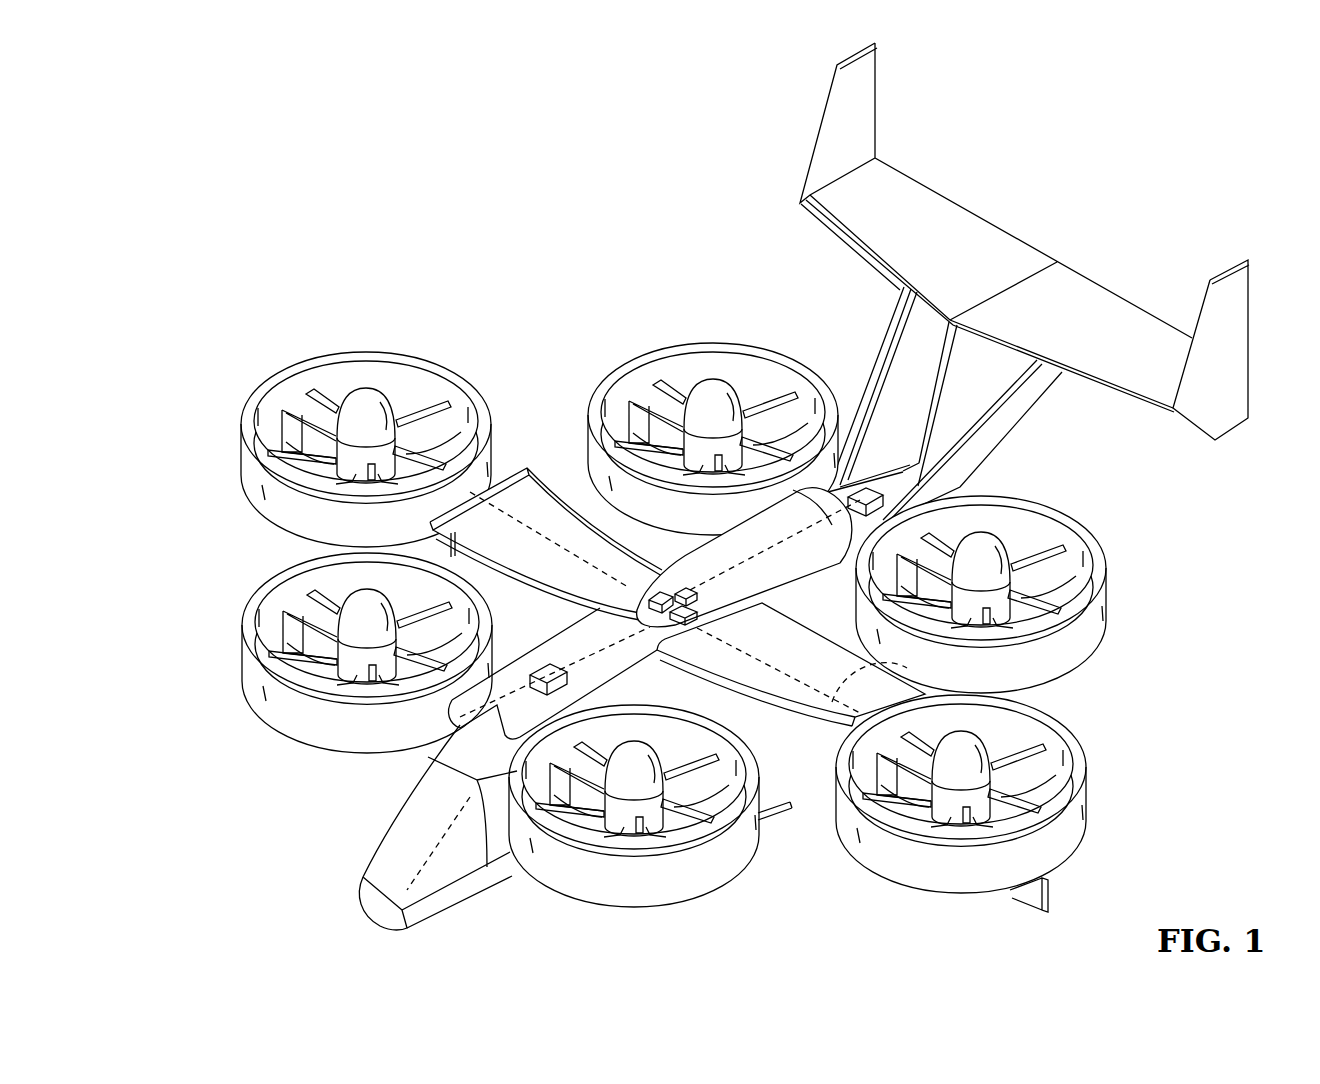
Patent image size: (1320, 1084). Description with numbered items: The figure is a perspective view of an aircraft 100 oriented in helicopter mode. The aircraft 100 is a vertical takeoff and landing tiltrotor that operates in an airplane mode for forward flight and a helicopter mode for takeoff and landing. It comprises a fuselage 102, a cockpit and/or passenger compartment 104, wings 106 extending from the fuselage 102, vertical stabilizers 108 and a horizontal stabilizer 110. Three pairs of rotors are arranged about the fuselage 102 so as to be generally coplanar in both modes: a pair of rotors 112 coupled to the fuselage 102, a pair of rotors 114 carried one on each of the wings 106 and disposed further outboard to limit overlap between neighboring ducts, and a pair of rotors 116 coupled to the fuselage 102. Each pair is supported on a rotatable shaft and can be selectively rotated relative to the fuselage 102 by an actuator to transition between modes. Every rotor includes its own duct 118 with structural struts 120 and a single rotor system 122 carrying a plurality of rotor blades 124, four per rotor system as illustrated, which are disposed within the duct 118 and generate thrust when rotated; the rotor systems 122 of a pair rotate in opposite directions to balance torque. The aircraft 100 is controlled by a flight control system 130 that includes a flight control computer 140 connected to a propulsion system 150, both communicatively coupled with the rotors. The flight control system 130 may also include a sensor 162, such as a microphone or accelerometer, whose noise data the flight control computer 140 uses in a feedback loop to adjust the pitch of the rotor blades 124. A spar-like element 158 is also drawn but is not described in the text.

The aircraft 100 is at (376, 206).
The fuselage 102 is at (363, 890).
The cockpit and/or passenger compartment 104 is at (393, 825).
The wings 106 is at (525, 508).
The vertical stabilizers 108 is at (897, 317).
The horizontal stabilizer 110 is at (990, 235).
The pair of rotors 112 is at (231, 720).
The pair of rotors 114 is at (222, 441).
The pair of rotors 116 is at (642, 283).
The duct 118 is at (398, 380).
The struts 120 is at (282, 412).
The rotor system 122 is at (367, 397).
The rotor blades 124 is at (443, 408).
The flight control system 130 is at (521, 687).
The flight control computer 140 is at (540, 663).
The propulsion system 150 is at (673, 589).
The wing spar 158 is at (870, 690).
The sensor 162 is at (890, 468).